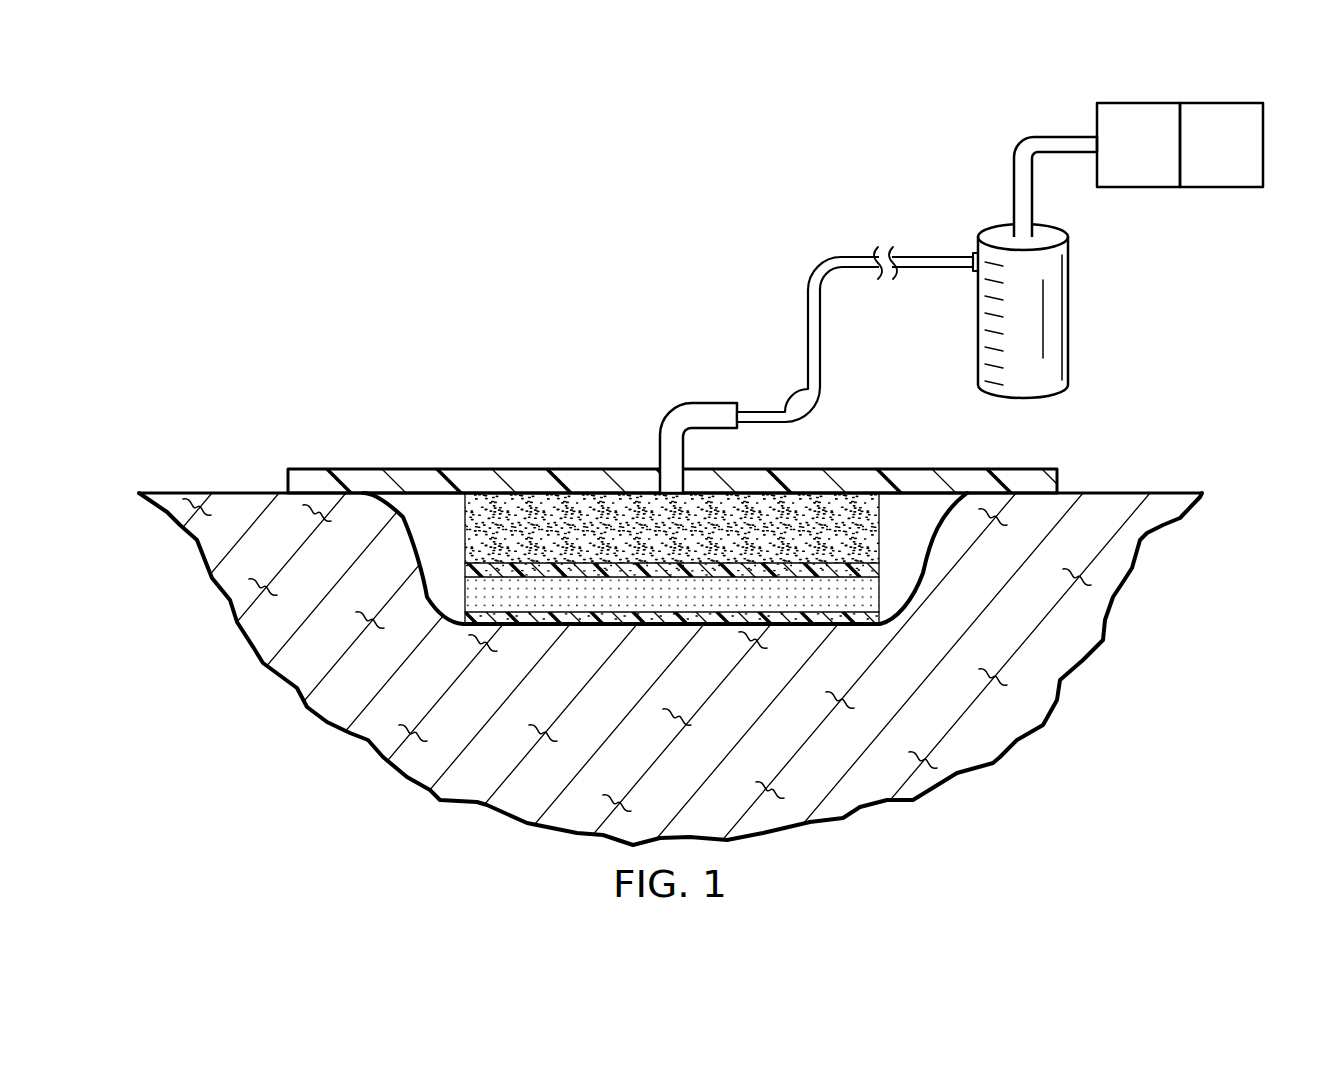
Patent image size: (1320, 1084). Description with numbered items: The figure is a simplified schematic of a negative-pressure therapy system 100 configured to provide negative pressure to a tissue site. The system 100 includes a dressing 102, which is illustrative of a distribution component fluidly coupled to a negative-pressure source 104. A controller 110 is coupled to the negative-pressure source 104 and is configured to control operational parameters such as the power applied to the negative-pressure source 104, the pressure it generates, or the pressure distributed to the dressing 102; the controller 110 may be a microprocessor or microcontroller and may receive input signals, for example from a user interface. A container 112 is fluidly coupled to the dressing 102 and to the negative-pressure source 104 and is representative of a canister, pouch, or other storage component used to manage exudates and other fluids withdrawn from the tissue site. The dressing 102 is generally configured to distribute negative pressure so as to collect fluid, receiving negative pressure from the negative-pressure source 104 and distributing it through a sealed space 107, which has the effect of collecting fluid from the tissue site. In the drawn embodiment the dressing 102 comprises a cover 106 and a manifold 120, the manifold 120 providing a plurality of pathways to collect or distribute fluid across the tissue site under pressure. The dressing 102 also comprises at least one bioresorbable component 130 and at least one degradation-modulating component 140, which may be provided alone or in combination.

The system 100 is at (437, 265).
The dressing 102 is at (572, 383).
The negative-pressure source 104 is at (1160, 161).
The cover 106 is at (527, 478).
The sealed space 107 is at (443, 530).
The controller 110 is at (1244, 161).
The container 112 is at (1070, 284).
The manifold 120 is at (693, 543).
The bioresorbable component 130 is at (867, 597).
The degradation-modulating component 140 is at (880, 571).